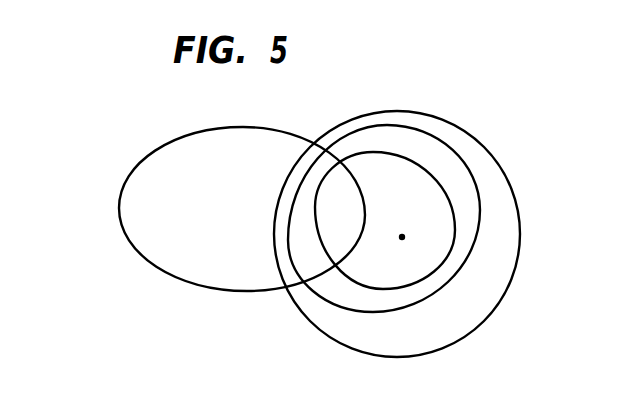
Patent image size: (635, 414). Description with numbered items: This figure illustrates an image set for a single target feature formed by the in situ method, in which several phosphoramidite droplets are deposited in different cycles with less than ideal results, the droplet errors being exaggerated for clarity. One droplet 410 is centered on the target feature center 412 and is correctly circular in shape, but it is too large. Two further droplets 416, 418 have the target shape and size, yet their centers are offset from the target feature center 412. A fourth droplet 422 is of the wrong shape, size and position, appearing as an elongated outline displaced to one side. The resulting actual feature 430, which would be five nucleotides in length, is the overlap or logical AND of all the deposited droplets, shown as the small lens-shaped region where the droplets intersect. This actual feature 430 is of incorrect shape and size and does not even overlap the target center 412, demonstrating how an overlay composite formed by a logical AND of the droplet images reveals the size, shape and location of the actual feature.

The phosphoramidite droplet 410 is at (513, 276).
The target feature center 412 is at (402, 237).
The phosphoramidite droplet 416 is at (444, 138).
The phosphoramidite droplet 418 is at (320, 300).
The phosphoramidite droplet 422 is at (147, 157).
The actual feature 430 is at (355, 213).